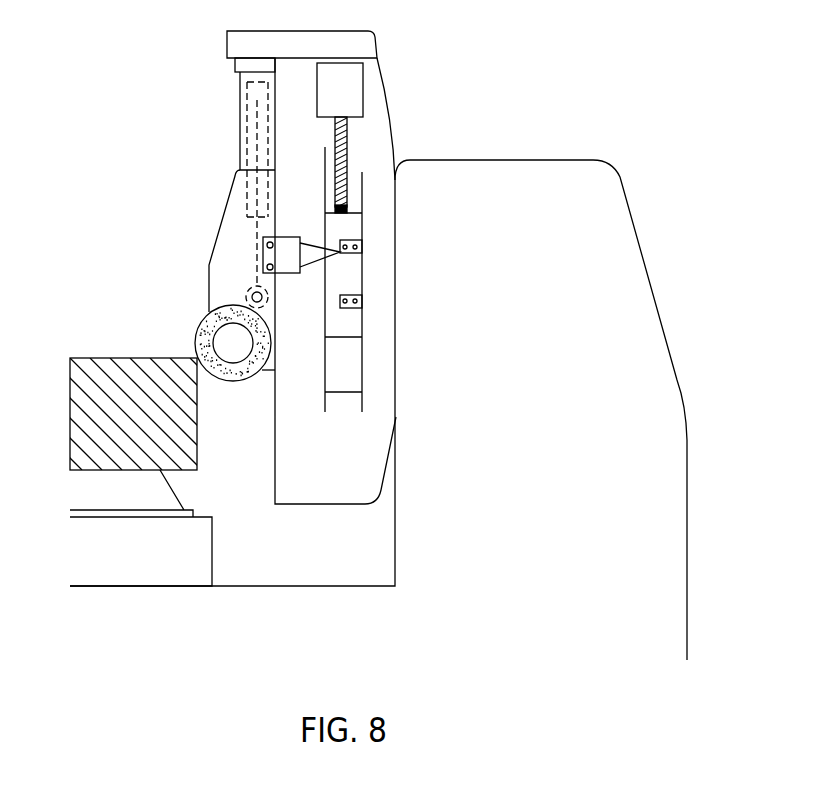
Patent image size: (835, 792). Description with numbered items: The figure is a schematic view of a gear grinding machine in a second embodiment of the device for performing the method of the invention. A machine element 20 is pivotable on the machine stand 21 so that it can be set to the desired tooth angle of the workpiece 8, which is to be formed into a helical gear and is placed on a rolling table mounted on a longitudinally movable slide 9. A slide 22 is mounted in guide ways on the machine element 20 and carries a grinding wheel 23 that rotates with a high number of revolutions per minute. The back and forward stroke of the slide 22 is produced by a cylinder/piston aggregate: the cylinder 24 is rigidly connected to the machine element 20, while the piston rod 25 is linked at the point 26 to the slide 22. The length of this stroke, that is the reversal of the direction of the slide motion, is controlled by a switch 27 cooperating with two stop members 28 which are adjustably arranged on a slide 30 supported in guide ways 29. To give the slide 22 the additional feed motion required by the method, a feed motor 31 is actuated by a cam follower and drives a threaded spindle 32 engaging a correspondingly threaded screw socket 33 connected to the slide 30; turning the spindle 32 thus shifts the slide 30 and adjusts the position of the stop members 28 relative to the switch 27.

The workpiece 8 is at (103, 370).
The longitudinally movable slide 9 is at (182, 557).
The machine element 20 is at (345, 477).
The machine stand 21 is at (613, 263).
The slide 22 is at (233, 250).
The grinding wheel 23 is at (207, 333).
The cylinder 24 is at (240, 112).
The piston rod 25 is at (255, 153).
The link point 26 is at (247, 291).
The switch 27 is at (300, 273).
The stop members 28 is at (362, 247).
The guide ways 29 is at (365, 372).
The slide 30 is at (349, 328).
The feed motor 31 is at (350, 87).
The threaded spindle 32 is at (347, 130).
The screw socket 33 is at (345, 162).